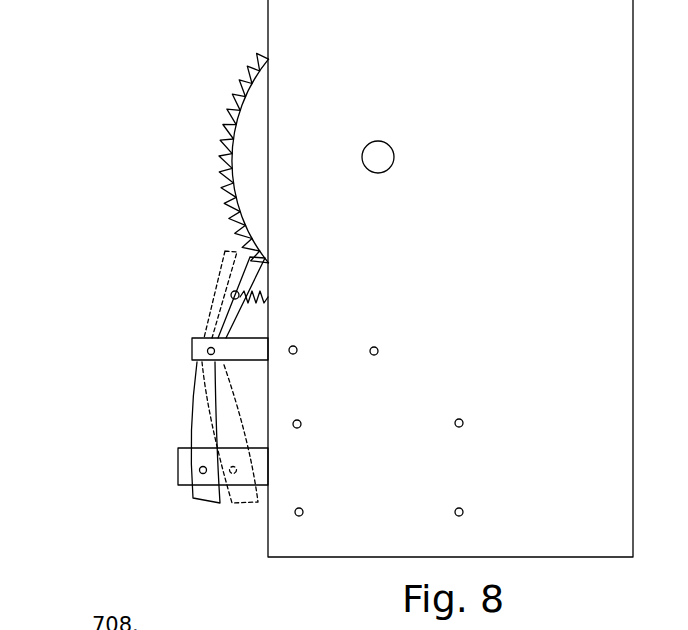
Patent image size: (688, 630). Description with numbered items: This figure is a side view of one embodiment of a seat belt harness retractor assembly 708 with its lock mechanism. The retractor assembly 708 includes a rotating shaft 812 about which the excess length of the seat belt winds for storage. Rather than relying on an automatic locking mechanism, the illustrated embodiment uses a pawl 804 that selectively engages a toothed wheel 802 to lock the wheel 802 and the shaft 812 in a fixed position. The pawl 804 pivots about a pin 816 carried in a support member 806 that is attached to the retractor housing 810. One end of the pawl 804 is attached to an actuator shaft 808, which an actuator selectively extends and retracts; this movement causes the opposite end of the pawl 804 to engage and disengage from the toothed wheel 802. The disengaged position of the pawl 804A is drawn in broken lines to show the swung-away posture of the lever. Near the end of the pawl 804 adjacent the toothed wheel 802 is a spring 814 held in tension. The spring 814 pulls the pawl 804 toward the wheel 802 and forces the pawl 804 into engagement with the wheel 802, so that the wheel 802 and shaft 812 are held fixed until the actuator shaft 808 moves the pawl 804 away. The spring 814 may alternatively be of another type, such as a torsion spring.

The seat belt harness retractor assembly 708 is at (153, 73).
The toothed wheel 802 is at (218, 159).
The pawl 804 is at (191, 417).
The pawl in disengaged position 804A is at (225, 256).
The support member 806 is at (192, 352).
The actuator shaft 808 is at (178, 470).
The retractor housing 810 is at (518, 271).
The rotating shaft 812 is at (394, 157).
The spring 814 is at (258, 303).
The pin 816 is at (208, 349).